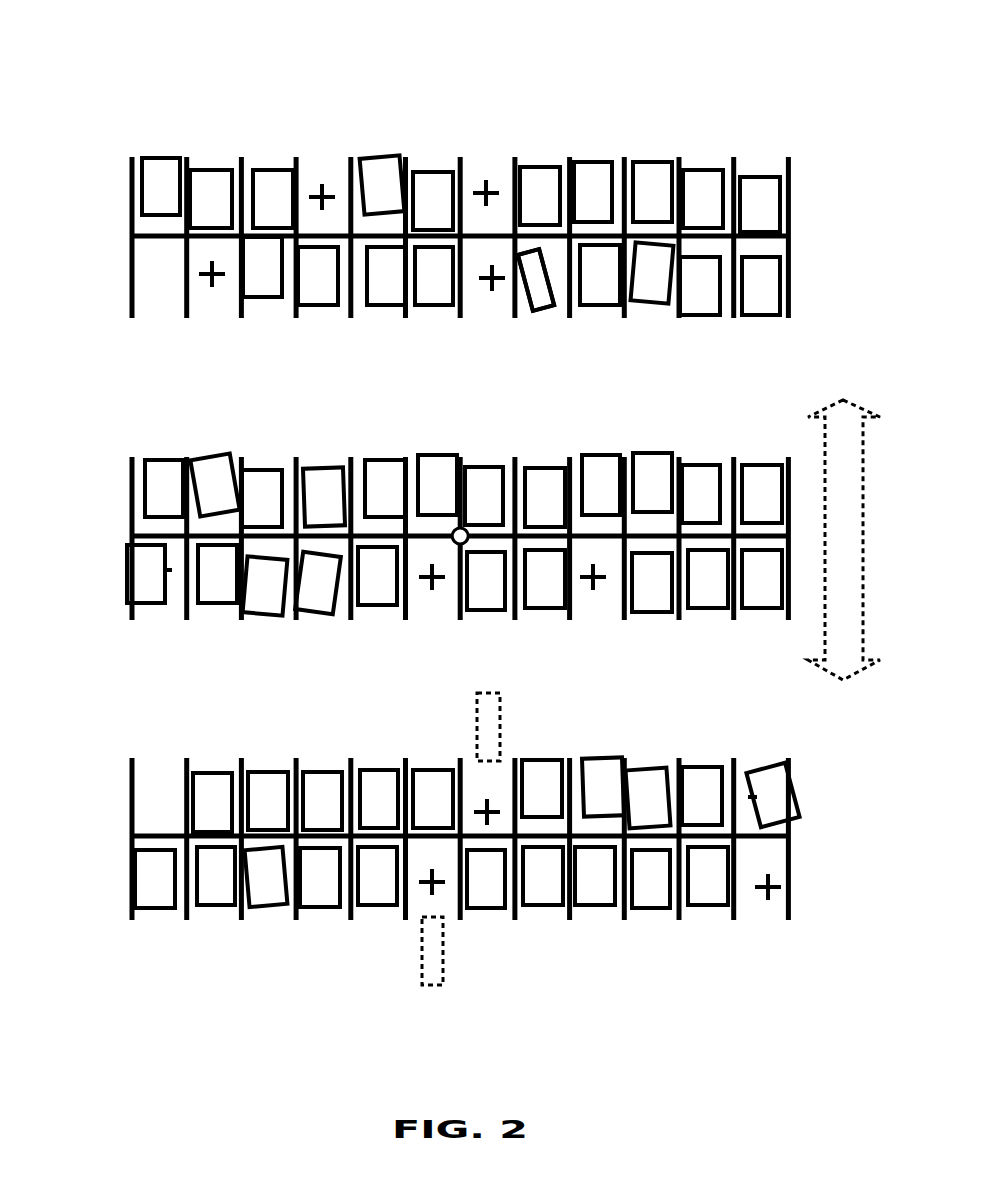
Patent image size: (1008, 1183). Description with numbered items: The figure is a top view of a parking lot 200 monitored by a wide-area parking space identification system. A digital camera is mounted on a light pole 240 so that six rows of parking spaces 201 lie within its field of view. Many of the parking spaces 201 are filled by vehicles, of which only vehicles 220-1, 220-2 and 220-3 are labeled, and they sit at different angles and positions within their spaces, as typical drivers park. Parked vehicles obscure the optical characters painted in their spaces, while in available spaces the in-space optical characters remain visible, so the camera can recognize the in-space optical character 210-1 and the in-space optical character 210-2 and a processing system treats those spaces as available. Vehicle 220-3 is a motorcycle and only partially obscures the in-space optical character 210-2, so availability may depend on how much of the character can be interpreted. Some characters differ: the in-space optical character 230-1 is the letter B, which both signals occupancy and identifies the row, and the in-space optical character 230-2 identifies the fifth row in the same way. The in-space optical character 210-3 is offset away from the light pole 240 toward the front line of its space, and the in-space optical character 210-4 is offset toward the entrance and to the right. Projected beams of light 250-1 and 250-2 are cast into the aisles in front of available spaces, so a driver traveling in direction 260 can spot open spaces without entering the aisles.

The parking lot 200 is at (108, 62).
The parking spaces 201 is at (241, 157).
The in-space optical character 210-1 is at (322, 182).
The in-space optical character 210-2 is at (486, 178).
The in-space optical character 210-3 is at (487, 798).
The in-space optical character 210-4 is at (776, 887).
The vehicle 220-1 is at (170, 157).
The vehicle 220-2 is at (145, 490).
The vehicle 220-3 is at (522, 311).
The in-space optical character 230-1 is at (152, 288).
The in-space optical character 230-2 is at (148, 792).
The light pole 240 is at (462, 527).
The projected beam of light 250-1 is at (498, 706).
The projected beam of light 250-2 is at (425, 972).
The direction 260 is at (855, 400).